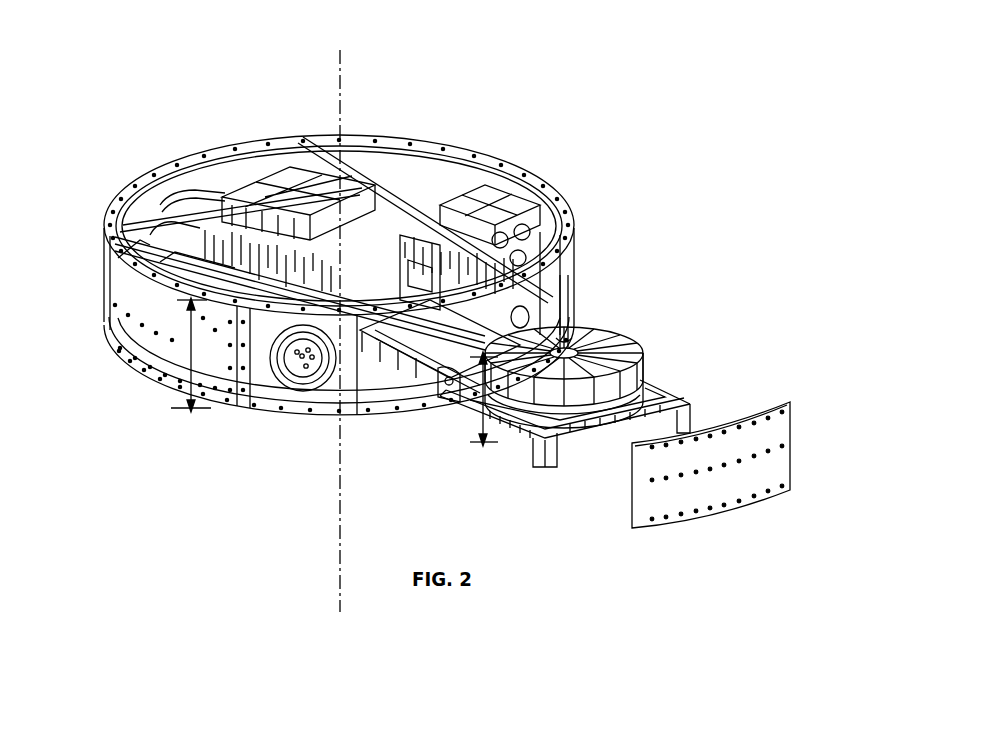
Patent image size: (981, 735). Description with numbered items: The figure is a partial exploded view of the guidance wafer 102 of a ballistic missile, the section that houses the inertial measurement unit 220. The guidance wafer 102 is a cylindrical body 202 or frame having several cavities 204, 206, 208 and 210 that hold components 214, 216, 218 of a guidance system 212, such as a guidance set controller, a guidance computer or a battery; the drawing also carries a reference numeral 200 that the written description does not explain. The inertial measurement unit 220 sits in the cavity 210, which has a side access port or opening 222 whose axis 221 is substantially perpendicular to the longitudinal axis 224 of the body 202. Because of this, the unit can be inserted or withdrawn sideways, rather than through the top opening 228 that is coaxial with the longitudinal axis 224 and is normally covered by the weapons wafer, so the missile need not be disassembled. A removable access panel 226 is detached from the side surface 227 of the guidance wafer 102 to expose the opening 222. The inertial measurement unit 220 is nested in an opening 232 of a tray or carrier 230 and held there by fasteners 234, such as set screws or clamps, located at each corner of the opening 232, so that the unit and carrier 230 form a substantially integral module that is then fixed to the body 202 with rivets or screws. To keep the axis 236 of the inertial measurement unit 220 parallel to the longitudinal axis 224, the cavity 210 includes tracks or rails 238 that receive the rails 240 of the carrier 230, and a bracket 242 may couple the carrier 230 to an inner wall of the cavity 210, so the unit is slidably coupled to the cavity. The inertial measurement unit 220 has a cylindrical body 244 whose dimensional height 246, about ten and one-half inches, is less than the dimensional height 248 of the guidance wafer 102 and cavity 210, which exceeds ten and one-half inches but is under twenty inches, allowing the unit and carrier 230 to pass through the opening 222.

The guidance wafer 102 is at (579, 36).
The mounting assembly 200 is at (655, 337).
The body 202 is at (152, 318).
The cavity 204 is at (426, 130).
The cavity 206 is at (175, 190).
The cavity 208 is at (133, 242).
The cavity 210 is at (548, 224).
The guidance system 212 is at (482, 127).
The component 214 is at (505, 212).
The component 216 is at (268, 190).
The component 218 is at (162, 256).
The inertial measurement unit 220 is at (604, 340).
The axis of the access port 221 is at (432, 385).
The side access port 222 is at (408, 354).
The longitudinal axis 224 is at (339, 68).
The access panel 226 is at (683, 497).
The side surface 227 is at (262, 383).
The top opening 228 is at (374, 134).
The carrier 230 is at (692, 409).
The opening of the carrier 232 is at (660, 396).
The fasteners 234 is at (458, 392).
The axis of the inertial measurement unit 236 is at (565, 292).
The rails 238 is at (480, 262).
The rails of the carrier 240 is at (656, 395).
The bracket 242 is at (488, 215).
The cylindrical body 244 is at (602, 338).
The dimensional height 246 is at (480, 432).
The dimensional height 248 is at (188, 362).